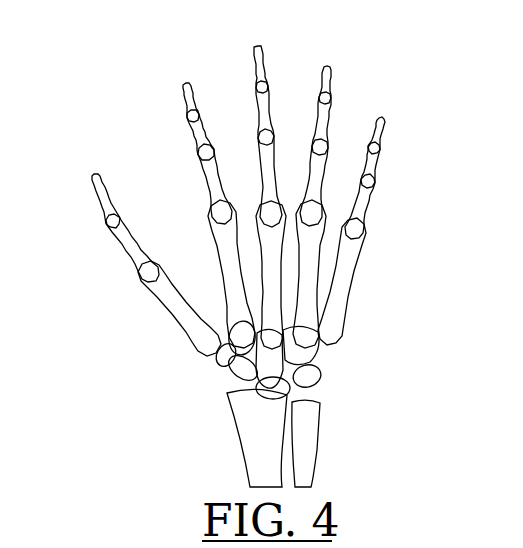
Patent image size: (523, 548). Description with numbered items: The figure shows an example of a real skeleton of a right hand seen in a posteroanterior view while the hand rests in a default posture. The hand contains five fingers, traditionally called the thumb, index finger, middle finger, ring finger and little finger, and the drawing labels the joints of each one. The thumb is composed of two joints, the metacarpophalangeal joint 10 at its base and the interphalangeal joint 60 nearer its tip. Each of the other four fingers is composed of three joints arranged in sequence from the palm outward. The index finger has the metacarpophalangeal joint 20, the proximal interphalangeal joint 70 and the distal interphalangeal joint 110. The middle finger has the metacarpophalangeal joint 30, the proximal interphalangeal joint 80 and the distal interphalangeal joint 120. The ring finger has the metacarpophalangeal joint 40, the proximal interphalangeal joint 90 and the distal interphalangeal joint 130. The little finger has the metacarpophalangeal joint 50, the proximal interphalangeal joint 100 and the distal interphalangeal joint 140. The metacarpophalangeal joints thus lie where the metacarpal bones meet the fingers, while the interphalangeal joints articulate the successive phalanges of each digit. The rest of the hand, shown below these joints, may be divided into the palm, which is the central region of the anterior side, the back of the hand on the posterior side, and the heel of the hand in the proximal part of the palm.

The metacarpophalangeal joint 10 is at (133, 268).
The metacarpophalangeal joint 20 is at (210, 213).
The metacarpophalangeal joint 30 is at (260, 190).
The metacarpophalangeal joint 40 is at (310, 213).
The metacarpophalangeal joint 50 is at (362, 235).
The interphalangeal joint 60 is at (112, 222).
The proximal interphalangeal joint 70 is at (197, 150).
The proximal interphalangeal joint 80 is at (258, 130).
The proximal interphalangeal joint 90 is at (320, 138).
The proximal interphalangeal joint 100 is at (373, 177).
The distal interphalangeal joint 110 is at (187, 113).
The distal interphalangeal joint 120 is at (267, 92).
The distal interphalangeal joint 130 is at (333, 105).
The distal interphalangeal joint 140 is at (383, 150).